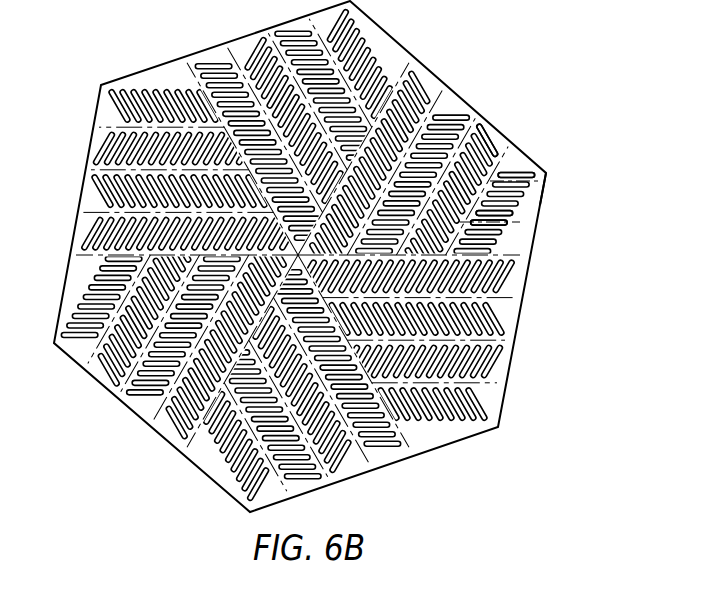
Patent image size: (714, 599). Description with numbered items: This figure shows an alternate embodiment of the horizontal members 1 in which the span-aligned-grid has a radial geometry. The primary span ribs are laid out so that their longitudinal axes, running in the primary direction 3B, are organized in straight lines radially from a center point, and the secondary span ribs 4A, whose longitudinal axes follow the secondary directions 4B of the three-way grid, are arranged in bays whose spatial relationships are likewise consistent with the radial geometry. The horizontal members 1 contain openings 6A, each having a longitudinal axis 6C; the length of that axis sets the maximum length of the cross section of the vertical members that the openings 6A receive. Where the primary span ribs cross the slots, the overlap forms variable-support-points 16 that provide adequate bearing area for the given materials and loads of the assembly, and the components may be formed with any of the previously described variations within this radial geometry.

The horizontal members 1 is at (446, 84).
The primary direction 3B is at (490, 147).
The secondary span ribs 4A is at (540, 173).
The secondary directions 4B is at (540, 181).
The longitudinal axis of the openings 6C is at (512, 220).
The openings 6A is at (514, 227).
The variable-support-points 16 is at (466, 222).